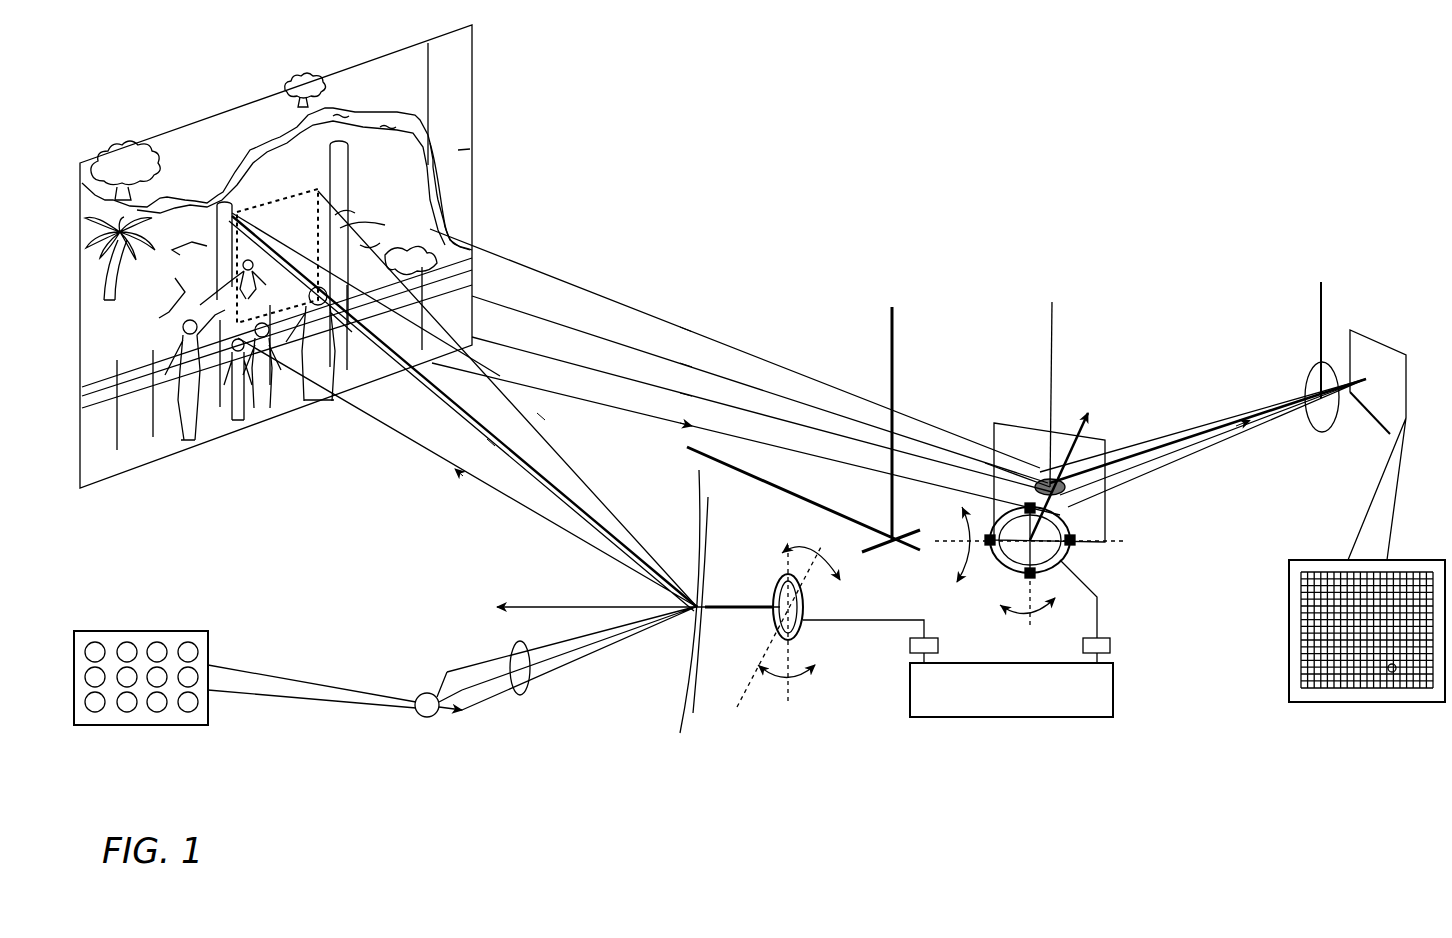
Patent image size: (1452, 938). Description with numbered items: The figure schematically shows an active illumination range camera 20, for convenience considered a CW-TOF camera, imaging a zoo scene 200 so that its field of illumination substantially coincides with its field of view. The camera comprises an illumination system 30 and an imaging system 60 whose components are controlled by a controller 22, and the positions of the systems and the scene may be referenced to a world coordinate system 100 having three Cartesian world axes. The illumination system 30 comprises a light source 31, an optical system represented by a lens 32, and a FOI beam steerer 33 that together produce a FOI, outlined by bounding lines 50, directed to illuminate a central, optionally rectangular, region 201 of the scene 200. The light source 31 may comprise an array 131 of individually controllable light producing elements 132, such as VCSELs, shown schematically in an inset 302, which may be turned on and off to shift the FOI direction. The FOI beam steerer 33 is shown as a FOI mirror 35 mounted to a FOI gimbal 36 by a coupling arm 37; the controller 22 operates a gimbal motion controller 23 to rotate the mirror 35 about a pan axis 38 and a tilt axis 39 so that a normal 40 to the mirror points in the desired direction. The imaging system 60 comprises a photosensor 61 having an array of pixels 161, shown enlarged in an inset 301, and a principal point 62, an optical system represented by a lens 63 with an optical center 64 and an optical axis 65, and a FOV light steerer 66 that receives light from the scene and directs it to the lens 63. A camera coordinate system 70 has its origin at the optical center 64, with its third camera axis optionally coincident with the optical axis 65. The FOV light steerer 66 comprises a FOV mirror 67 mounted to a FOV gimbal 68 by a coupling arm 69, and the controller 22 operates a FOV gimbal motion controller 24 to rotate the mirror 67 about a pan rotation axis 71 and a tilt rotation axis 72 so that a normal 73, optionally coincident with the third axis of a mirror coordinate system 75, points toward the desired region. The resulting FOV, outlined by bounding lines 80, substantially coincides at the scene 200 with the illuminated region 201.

The scene 200 is at (545, 128).
The region 201 is at (252, 205).
The active illumination range camera 20 is at (1030, 155).
The bounding lines 80 is at (597, 335).
The bounding lines 50 is at (515, 518).
The illumination system 30 is at (322, 606).
The inset 302 is at (110, 630).
The array 131 is at (172, 645).
The light producing elements 132 is at (125, 712).
The light source 31 is at (430, 718).
The lens 32 is at (522, 697).
The FOI beam steerer 33 is at (632, 768).
The FOI mirror 35 is at (690, 668).
The normal 40 is at (512, 602).
The FOI gimbal 36 is at (806, 612).
The coupling arm 37 is at (747, 600).
The pan axis 38 is at (790, 705).
The tilt axis 39 is at (737, 707).
The world coordinate system 100 is at (873, 325).
The mirror coordinate system 75 is at (1085, 295).
The FOV mirror 67 is at (1014, 437).
The normal 73 is at (1082, 416).
The FOV gimbal 68 is at (1078, 552).
The coupling arm 69 is at (1135, 530).
The tilt rotation axis 72 is at (953, 565).
The pan rotation axis 71 is at (1028, 622).
The FOV light steerer 66 is at (1163, 605).
The controller 22 is at (1012, 718).
The gimbal motion controller 23 is at (906, 646).
The FOV gimbal motion controller 24 is at (1112, 646).
The imaging system 60 is at (1247, 262).
The camera coordinate system 70 is at (1330, 290).
The optical center 64 is at (1325, 433).
The optical axis 65 is at (1268, 428).
The lens 63 is at (1303, 383).
The photosensor 61 is at (1400, 347).
The principal point 62 is at (1357, 333).
The inset 301 is at (1350, 703).
The pixels 161 is at (1392, 672).